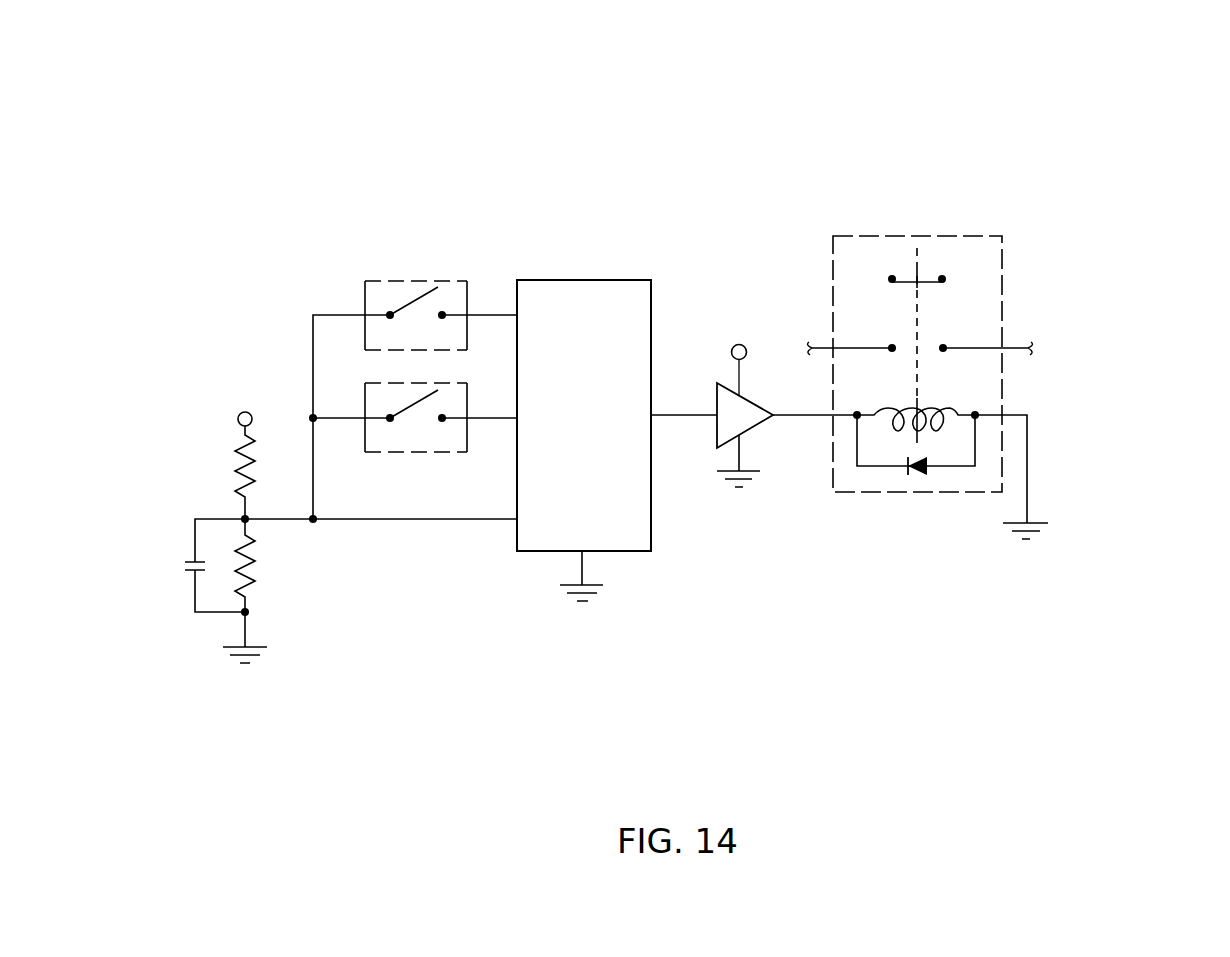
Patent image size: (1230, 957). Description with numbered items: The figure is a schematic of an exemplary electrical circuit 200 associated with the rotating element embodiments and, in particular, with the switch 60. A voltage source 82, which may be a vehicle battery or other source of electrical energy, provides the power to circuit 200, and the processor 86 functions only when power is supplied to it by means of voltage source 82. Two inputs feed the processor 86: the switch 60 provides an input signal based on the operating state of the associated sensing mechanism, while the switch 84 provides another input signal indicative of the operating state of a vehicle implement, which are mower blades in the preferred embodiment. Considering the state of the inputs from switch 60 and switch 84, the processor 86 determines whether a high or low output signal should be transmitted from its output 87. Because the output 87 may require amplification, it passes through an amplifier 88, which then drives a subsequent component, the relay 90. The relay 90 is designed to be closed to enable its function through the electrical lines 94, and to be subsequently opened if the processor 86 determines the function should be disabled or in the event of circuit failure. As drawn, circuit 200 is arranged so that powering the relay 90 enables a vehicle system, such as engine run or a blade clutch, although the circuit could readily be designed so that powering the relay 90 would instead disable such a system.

The electrical circuit 200 is at (1120, 116).
The voltage source 82 is at (238, 419).
The switch 60 is at (425, 280).
The switch 84 is at (423, 452).
The processor 86 is at (600, 426).
The output 87 is at (652, 413).
The amplifier 88 is at (758, 422).
The relay 90 is at (866, 492).
The electrical lines 94 is at (823, 343).